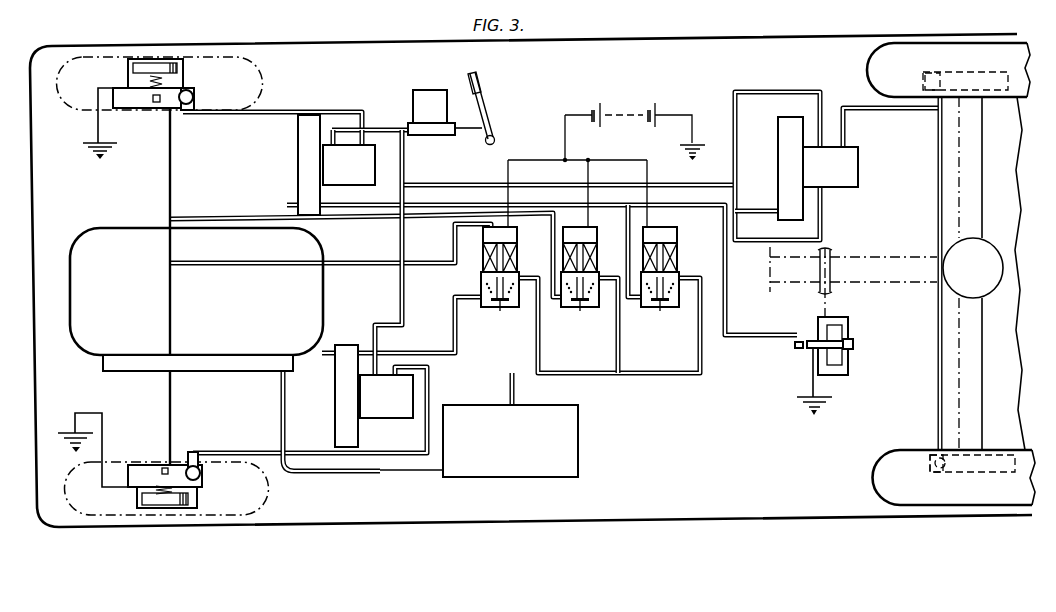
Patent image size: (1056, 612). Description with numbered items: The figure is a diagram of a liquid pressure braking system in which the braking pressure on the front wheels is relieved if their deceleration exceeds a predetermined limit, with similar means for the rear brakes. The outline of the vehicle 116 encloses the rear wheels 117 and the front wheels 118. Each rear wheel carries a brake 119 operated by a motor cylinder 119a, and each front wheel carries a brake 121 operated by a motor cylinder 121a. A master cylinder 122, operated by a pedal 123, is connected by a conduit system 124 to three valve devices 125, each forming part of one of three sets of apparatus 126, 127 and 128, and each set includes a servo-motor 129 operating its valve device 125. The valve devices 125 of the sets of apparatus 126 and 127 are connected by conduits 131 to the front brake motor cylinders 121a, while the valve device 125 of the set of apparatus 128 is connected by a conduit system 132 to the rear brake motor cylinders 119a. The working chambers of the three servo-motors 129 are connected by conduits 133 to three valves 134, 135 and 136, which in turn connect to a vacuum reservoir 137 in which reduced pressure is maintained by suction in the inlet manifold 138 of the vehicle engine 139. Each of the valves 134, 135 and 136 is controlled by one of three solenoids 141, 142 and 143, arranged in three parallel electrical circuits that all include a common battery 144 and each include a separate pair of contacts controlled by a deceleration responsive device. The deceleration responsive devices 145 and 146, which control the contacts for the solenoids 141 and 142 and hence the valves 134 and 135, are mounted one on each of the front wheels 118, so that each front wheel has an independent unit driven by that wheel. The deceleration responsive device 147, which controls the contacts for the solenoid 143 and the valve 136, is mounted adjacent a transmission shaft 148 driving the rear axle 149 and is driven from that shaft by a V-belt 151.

The outline of the vehicle 116 is at (1020, 127).
The rear wheels 117 is at (883, 60).
The front wheels 118 is at (232, 72).
The brake 119 is at (962, 72).
The motor cylinder 119a is at (925, 82).
The brake 121 is at (132, 110).
The motor cylinder 121a is at (197, 95).
The master cylinder 122 is at (412, 125).
The pedal 123 is at (480, 83).
The conduit system 124 is at (468, 184).
The valve device 125 is at (363, 170).
The set of apparatus 126 is at (344, 127).
The set of apparatus 127 is at (403, 430).
The set of apparatus 128 is at (862, 146).
The servo-motor 129 is at (307, 163).
The conduits 131 is at (292, 110).
The conduit system 132 is at (938, 198).
The conduits 133 is at (462, 296).
The valve 134 is at (523, 308).
The valve 135 is at (598, 304).
The valve 136 is at (684, 306).
The vacuum reservoir 137 is at (565, 460).
The inlet manifold 138 is at (157, 364).
The vehicle engine 139 is at (122, 253).
The solenoid 141 is at (487, 240).
The solenoid 142 is at (582, 234).
The solenoid 143 is at (664, 230).
The battery 144 is at (630, 110).
The deceleration responsive device 145 is at (158, 68).
The deceleration responsive device 146 is at (137, 499).
The deceleration responsive device 147 is at (848, 320).
The transmission shaft 148 is at (894, 266).
The rear axle 149 is at (968, 325).
The V-belt 151 is at (820, 305).